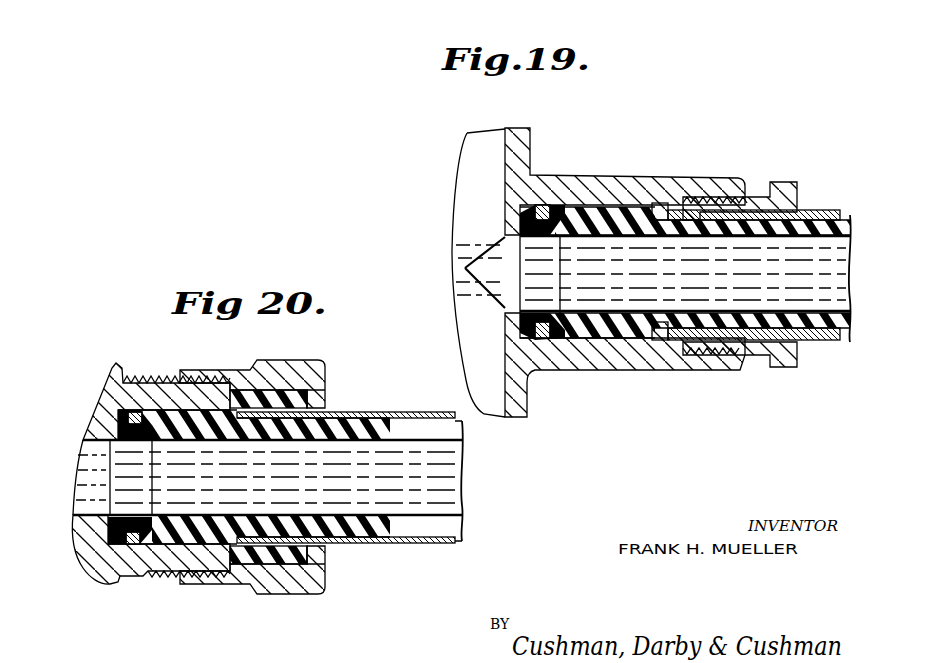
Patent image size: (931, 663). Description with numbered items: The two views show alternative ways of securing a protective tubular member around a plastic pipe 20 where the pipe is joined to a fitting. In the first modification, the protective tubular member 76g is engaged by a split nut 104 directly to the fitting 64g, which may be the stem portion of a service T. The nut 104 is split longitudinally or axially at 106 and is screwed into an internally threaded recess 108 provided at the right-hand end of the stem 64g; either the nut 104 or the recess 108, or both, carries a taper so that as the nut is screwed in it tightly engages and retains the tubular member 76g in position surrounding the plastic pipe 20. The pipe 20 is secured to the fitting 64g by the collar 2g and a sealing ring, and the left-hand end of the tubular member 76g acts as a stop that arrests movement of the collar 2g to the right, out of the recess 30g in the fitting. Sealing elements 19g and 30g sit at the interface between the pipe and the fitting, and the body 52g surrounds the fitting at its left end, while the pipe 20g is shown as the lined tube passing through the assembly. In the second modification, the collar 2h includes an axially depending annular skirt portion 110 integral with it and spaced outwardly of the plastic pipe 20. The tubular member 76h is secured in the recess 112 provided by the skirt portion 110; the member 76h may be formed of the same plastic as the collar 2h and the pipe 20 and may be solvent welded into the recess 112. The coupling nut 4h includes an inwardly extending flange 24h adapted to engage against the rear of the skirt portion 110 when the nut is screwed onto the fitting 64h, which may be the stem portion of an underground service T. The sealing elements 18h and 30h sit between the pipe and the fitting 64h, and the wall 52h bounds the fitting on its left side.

In FIG. 19, the wall 52g is at (453, 198).
In FIG. 19, the fitting 64g is at (606, 358).
In FIG. 19, the recess 30g is at (603, 222).
In FIG. 19, the pipe 20g is at (728, 230).
In FIG. 19, the collar 2g is at (583, 320).
In FIG. 19, the gasket 19g is at (540, 222).
In FIG. 19, the protective tubular member 76g is at (833, 342).
In FIG. 19, the split nut 104 is at (775, 184).
In FIG. 19, the split 106 is at (762, 355).
In FIG. 19, the internally threaded recess 108 is at (723, 190).
In FIG. 20, the wall 52h is at (85, 434).
In FIG. 20, the fitting 64h is at (142, 578).
In FIG. 20, the annular skirt portion 110 is at (298, 356).
In FIG. 20, the coupling nut 4h is at (278, 400).
In FIG. 20, the inwardly extending flange 24h is at (315, 395).
In FIG. 20, the recess 112 is at (255, 404).
In FIG. 20, the collar 2h is at (165, 428).
In FIG. 20, the gasket 18h is at (128, 532).
In FIG. 20, the seal 30h is at (203, 525).
In FIG. 20, the tubular member 76h is at (378, 413).
In FIG. 20, the plastic pipe 20 is at (432, 470).